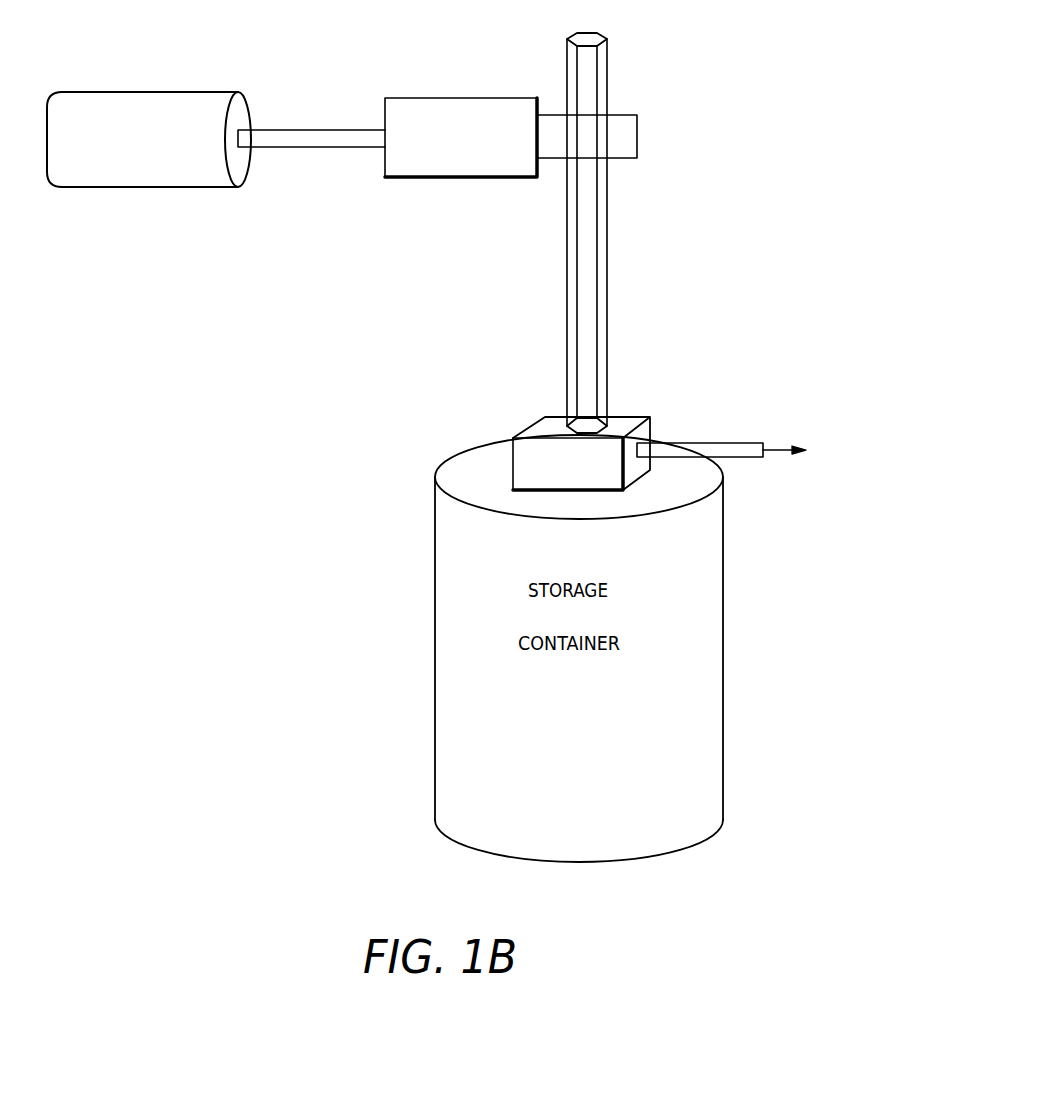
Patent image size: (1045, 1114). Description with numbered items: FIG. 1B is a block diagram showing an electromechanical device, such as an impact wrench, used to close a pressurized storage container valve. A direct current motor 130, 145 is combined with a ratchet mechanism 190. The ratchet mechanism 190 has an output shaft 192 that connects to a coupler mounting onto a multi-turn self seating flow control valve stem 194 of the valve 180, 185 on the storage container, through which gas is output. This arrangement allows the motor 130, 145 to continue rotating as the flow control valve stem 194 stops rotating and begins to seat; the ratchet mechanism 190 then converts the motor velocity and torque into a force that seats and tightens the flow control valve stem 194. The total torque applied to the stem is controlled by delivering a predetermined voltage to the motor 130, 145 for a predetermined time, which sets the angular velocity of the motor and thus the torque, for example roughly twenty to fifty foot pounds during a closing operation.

The motor 130 is at (149, 120).
The motor 145 is at (122, 105).
The valve 180 is at (585, 453).
The valve 185 is at (522, 454).
The ratchet mechanism 190 is at (507, 118).
The output shaft 192 is at (620, 128).
The flow control valve stem 194 is at (607, 262).